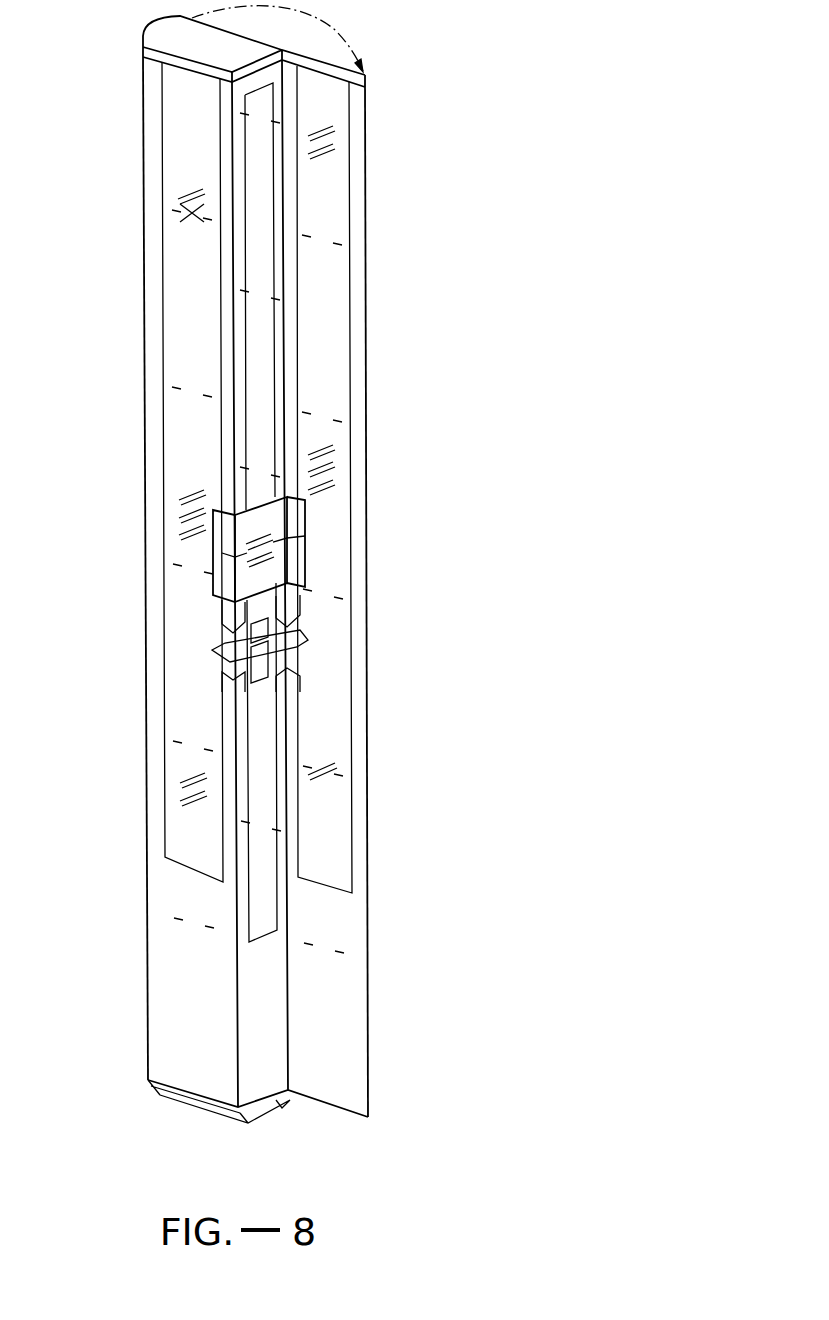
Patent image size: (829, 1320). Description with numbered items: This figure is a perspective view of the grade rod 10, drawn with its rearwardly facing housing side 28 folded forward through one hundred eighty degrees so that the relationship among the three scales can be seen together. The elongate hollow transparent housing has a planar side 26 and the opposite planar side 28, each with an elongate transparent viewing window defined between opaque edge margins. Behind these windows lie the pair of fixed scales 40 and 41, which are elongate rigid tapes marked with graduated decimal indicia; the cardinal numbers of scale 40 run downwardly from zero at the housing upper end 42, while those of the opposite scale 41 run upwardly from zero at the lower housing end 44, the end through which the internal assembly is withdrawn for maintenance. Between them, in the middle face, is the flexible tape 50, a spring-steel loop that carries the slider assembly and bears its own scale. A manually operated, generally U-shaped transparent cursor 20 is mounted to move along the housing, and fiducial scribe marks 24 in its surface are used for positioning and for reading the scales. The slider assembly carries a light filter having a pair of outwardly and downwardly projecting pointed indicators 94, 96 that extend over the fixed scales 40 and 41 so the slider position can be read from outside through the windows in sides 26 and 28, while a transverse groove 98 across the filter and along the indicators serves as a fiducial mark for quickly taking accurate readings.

The grade rod 10 is at (378, 304).
The cursor 20 is at (305, 498).
The fiducial scribe marks 24 is at (305, 536).
The planar side 26 is at (148, 119).
The planar side 28 is at (365, 116).
The fixed scale 40 is at (185, 532).
The fixed scale 41 is at (338, 190).
The housing upper end 42 is at (143, 45).
The lower housing end 44 is at (148, 1082).
The flexible tape 50 is at (268, 398).
The pointed indicator 94 is at (213, 650).
The pointed indicator 96 is at (287, 627).
The transverse groove 98 is at (305, 636).